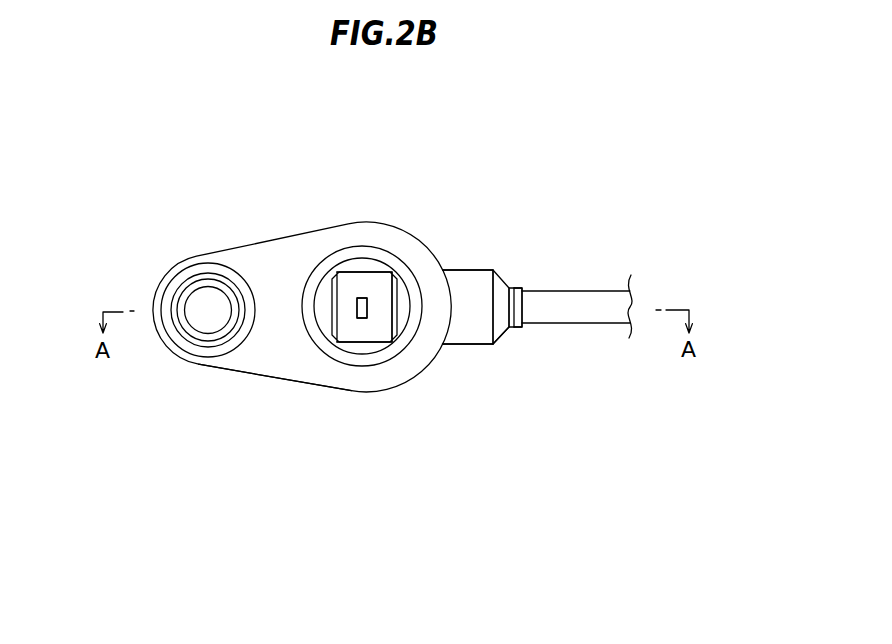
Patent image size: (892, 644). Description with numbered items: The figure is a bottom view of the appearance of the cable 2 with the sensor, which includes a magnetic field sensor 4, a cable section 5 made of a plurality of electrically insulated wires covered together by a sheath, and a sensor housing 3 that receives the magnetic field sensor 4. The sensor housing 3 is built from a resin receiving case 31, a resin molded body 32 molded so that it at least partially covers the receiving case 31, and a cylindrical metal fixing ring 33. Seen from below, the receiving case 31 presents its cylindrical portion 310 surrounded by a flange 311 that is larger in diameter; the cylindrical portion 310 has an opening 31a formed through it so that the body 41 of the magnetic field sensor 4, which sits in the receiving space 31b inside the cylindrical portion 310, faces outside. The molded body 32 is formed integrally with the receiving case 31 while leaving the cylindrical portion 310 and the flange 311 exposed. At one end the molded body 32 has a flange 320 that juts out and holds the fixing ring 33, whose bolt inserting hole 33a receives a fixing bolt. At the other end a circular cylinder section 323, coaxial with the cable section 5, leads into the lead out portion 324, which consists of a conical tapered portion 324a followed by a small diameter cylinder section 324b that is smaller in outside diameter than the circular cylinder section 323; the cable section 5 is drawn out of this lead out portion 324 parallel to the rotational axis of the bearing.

The cable with sensor 2 is at (144, 134).
The sensor housing 3 is at (211, 171).
The receiving case 31 is at (393, 392).
The opening 31a is at (467, 297).
The receiving space 31b is at (377, 282).
The cylindrical portion 310 is at (337, 272).
The flange 311 is at (347, 257).
The molded body 32 is at (490, 383).
The flange 320 is at (257, 361).
The circular cylinder section 323 is at (496, 272).
The lead out portion 324 is at (509, 287).
The tapered portion 324a is at (500, 340).
The small diameter cylinder section 324b is at (517, 327).
The fixing ring 33 is at (200, 282).
The bolt inserting hole 33a is at (195, 298).
The magnetic field sensor 4 is at (360, 335).
The body 41 is at (358, 314).
The cable section 5 is at (580, 312).